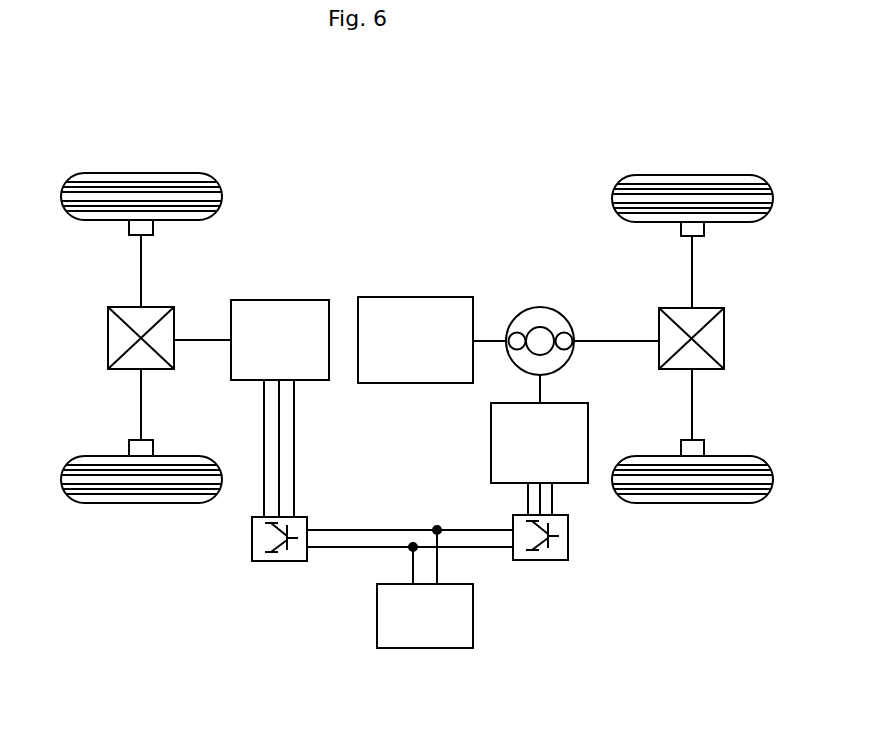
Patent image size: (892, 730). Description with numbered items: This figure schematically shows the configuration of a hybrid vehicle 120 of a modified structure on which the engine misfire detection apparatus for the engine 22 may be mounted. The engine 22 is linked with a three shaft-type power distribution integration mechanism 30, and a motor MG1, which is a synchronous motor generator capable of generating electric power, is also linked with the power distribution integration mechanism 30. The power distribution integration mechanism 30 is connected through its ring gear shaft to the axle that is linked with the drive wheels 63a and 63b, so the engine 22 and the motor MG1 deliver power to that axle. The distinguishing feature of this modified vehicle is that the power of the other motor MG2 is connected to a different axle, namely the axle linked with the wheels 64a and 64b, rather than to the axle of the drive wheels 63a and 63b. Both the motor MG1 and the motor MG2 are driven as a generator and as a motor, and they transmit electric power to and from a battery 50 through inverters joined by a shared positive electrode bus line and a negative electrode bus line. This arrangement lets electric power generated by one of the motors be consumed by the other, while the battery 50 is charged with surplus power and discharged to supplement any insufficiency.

The hybrid vehicle 120 is at (443, 152).
The wheel 64a is at (142, 173).
The wheel 64b is at (144, 503).
The drive wheel 63a is at (692, 175).
The drive wheel 63b is at (693, 503).
The motor MG2 is at (278, 300).
The motor MG1 is at (490, 440).
The engine 22 is at (415, 297).
The power distribution integration mechanism 30 is at (542, 307).
The battery 50 is at (473, 615).